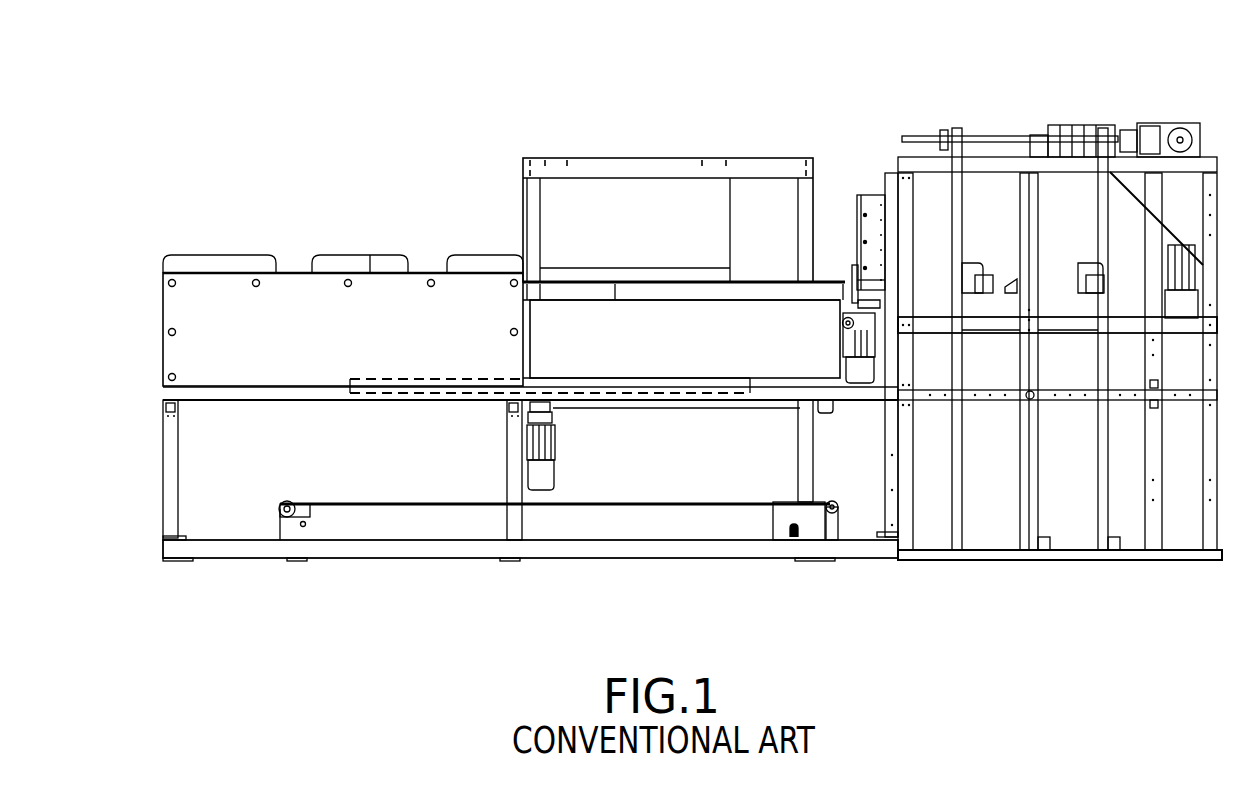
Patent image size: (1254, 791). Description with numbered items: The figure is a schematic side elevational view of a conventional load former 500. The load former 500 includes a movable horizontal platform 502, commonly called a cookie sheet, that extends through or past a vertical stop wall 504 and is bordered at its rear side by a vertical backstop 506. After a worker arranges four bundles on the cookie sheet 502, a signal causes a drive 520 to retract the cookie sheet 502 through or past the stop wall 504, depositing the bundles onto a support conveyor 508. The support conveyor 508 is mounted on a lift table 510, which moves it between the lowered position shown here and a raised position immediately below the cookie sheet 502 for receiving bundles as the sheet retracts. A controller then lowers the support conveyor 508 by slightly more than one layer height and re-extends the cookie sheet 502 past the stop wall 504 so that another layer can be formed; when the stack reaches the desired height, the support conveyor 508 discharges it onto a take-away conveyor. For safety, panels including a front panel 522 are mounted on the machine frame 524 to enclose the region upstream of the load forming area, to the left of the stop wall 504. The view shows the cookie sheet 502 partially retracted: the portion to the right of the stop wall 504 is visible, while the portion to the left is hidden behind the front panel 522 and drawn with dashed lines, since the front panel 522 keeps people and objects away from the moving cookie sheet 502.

The load former 500 is at (330, 118).
The movable horizontal platform 502 is at (705, 378).
The vertical stop wall 504 is at (527, 330).
The vertical backstop 506 is at (660, 318).
The support conveyor 508 is at (632, 503).
The lift table 510 is at (718, 523).
The drive 520 is at (553, 490).
The front panel 522 is at (225, 342).
The machine frame 524 is at (175, 463).